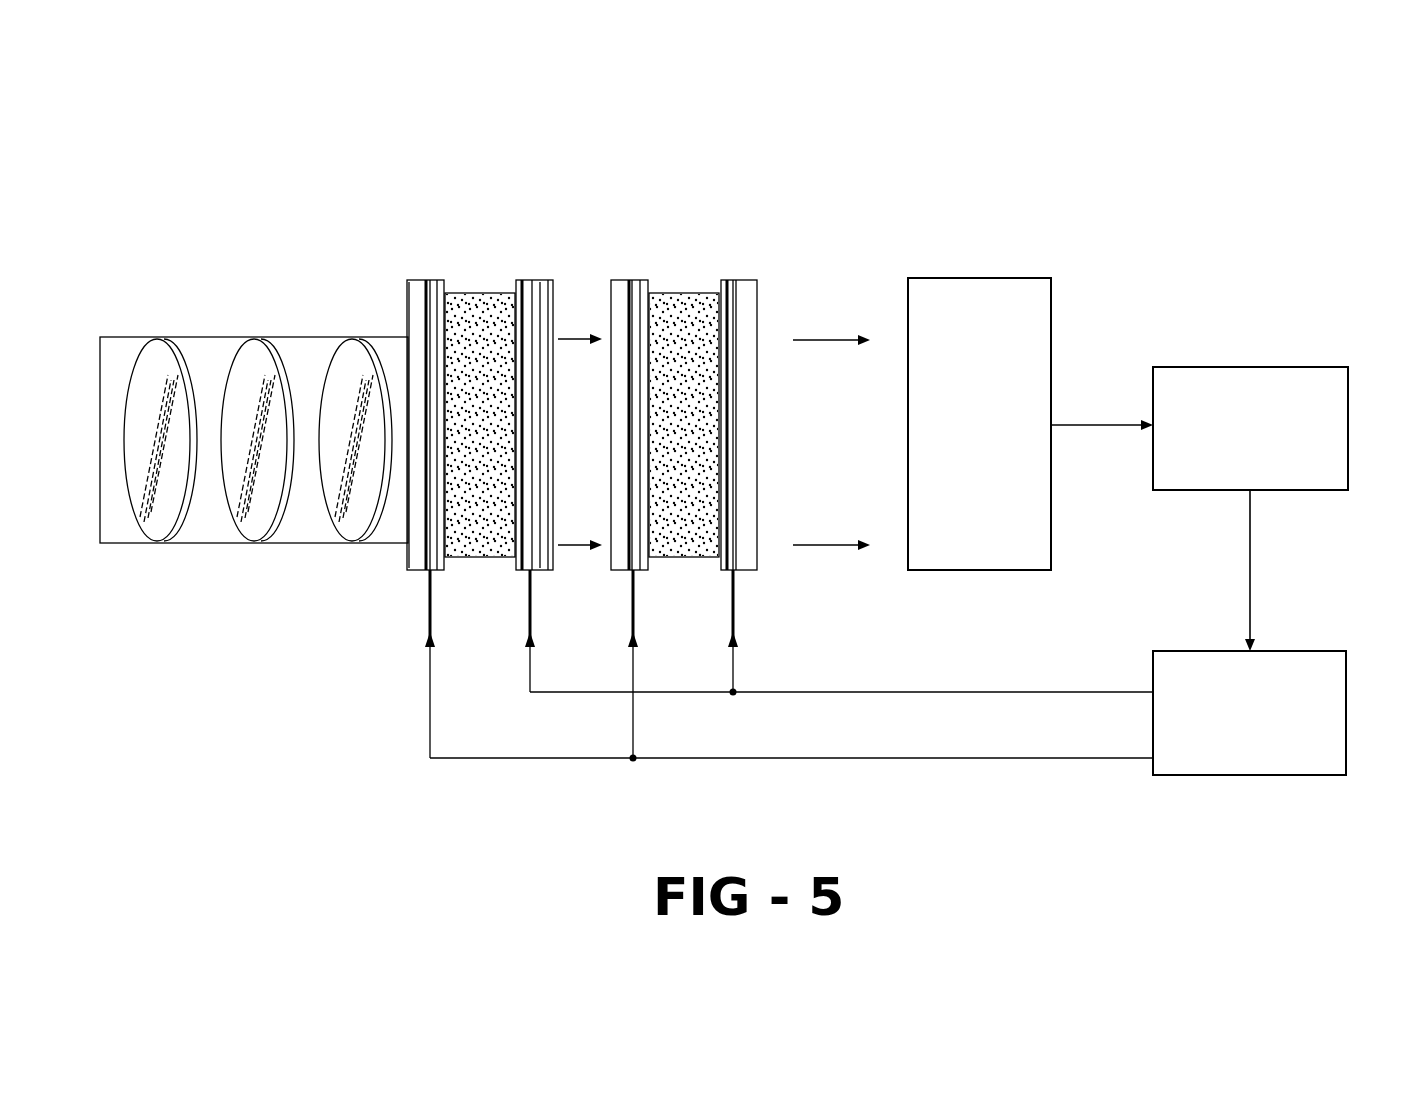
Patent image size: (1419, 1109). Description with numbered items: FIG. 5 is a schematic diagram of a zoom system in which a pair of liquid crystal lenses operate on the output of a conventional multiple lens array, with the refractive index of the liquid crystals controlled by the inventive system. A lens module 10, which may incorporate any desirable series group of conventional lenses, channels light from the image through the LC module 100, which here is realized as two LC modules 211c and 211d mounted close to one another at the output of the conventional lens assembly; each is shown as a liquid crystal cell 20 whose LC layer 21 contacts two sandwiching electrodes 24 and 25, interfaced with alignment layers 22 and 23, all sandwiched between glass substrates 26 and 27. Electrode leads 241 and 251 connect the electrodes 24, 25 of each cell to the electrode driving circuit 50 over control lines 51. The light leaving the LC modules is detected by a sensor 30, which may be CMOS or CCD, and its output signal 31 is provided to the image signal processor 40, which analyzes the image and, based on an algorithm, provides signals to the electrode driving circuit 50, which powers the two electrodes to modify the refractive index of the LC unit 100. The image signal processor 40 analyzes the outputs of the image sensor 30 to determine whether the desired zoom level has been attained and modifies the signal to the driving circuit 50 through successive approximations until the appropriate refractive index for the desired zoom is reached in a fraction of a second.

The lens module 10 is at (250, 337).
The LC module 100 is at (546, 120).
The liquid crystal cell 20 is at (442, 150).
The liquid crystal layer 21 is at (470, 560).
The alignment layer 22 is at (443, 280).
The alignment layer 23 is at (488, 292).
The electrode 24 is at (430, 280).
The electrode 25 is at (530, 280).
The glass substrate 26 is at (417, 280).
The glass substrate 27 is at (542, 280).
The LC module 211c is at (460, 292).
The LC module 211d is at (703, 292).
The first electrode wire 241 is at (403, 562).
The second electrode wire 251 is at (560, 562).
The sensor 30 is at (975, 278).
The image signal 31 is at (1088, 425).
The image signal processor 40 is at (1248, 367).
The electrode driving circuit 50 is at (1346, 708).
The control signal line 51 is at (834, 692).